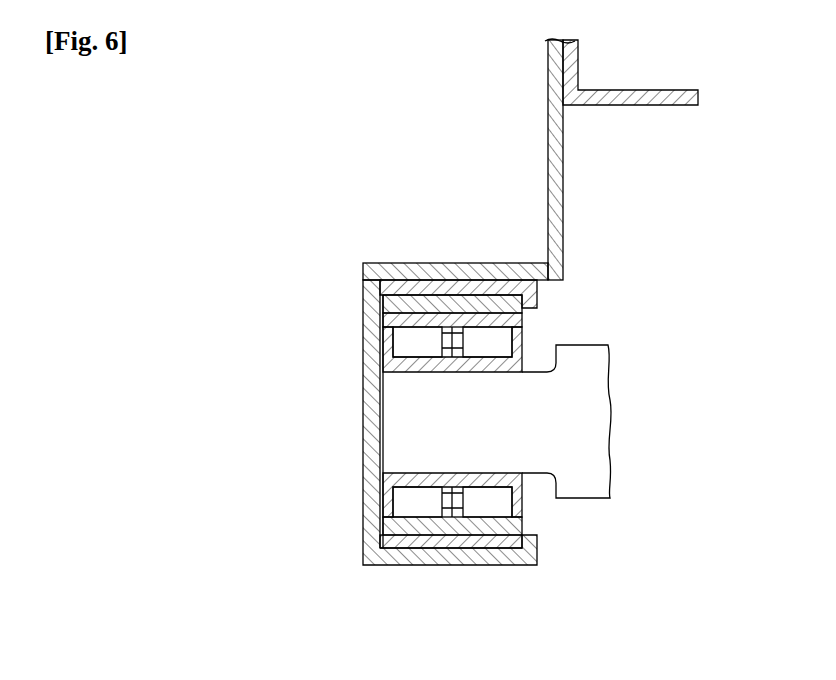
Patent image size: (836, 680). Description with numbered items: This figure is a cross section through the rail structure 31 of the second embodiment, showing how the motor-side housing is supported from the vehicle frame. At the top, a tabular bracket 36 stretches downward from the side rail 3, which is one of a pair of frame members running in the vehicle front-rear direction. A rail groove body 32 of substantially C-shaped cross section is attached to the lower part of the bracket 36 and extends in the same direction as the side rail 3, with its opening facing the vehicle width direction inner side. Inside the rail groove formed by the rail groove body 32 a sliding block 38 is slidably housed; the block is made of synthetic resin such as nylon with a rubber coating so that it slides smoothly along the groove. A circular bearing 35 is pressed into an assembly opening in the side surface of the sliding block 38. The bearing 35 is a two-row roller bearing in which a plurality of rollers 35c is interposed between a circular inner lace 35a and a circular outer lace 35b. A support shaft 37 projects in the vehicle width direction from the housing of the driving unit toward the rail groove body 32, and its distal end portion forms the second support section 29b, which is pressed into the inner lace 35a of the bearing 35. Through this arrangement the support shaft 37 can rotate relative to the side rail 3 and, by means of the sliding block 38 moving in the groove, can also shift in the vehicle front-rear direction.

The side rail 3 is at (643, 107).
The second support section 29b is at (342, 542).
The rail structure 31 is at (370, 565).
The rail groove body 32 is at (410, 563).
The circular bearing 35 is at (449, 437).
The inner lace 35a is at (385, 367).
The outer lace 35b is at (385, 306).
The roller 35c is at (393, 340).
The tabular bracket 36 is at (548, 163).
The support shaft 37 is at (590, 343).
The sliding block 38 is at (425, 290).